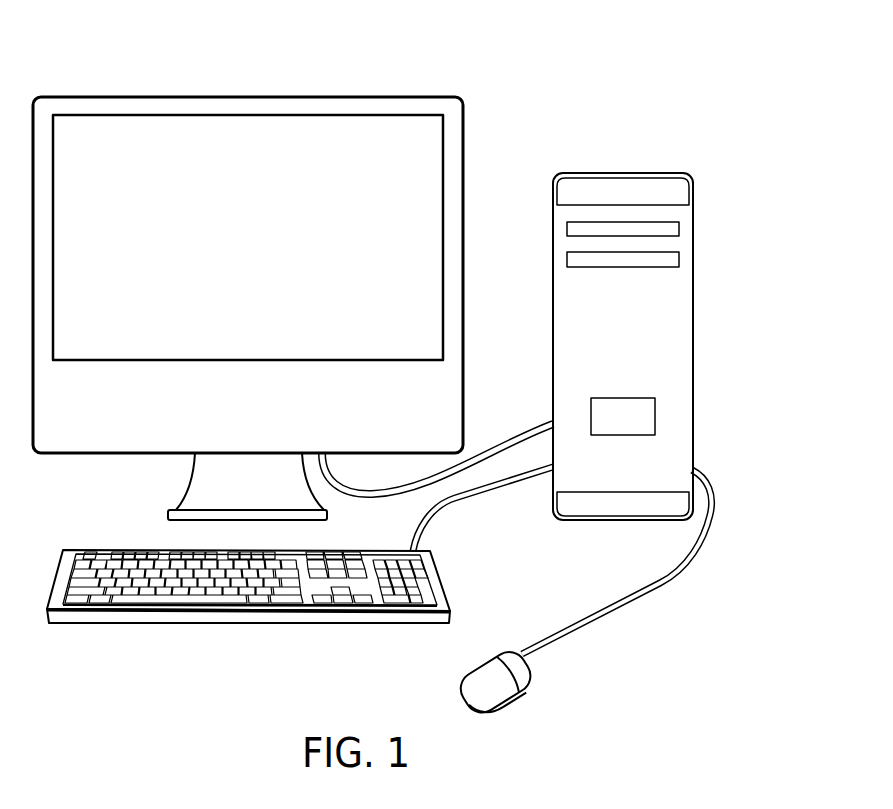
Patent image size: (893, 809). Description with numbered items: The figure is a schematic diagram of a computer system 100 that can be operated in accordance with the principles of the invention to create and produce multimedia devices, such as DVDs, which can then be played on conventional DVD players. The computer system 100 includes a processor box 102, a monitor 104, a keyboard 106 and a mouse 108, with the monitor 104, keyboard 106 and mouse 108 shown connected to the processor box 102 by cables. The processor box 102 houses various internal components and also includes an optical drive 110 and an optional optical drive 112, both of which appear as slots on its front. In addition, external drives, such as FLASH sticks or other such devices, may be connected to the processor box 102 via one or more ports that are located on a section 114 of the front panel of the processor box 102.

The computer system 100 is at (413, 39).
The processor box 102 is at (605, 172).
The monitor 104 is at (153, 96).
The keyboard 106 is at (132, 622).
The mouse 108 is at (522, 692).
The optical drive 110 is at (680, 224).
The optional optical drive 112 is at (682, 260).
The section of the front panel 114 is at (655, 420).